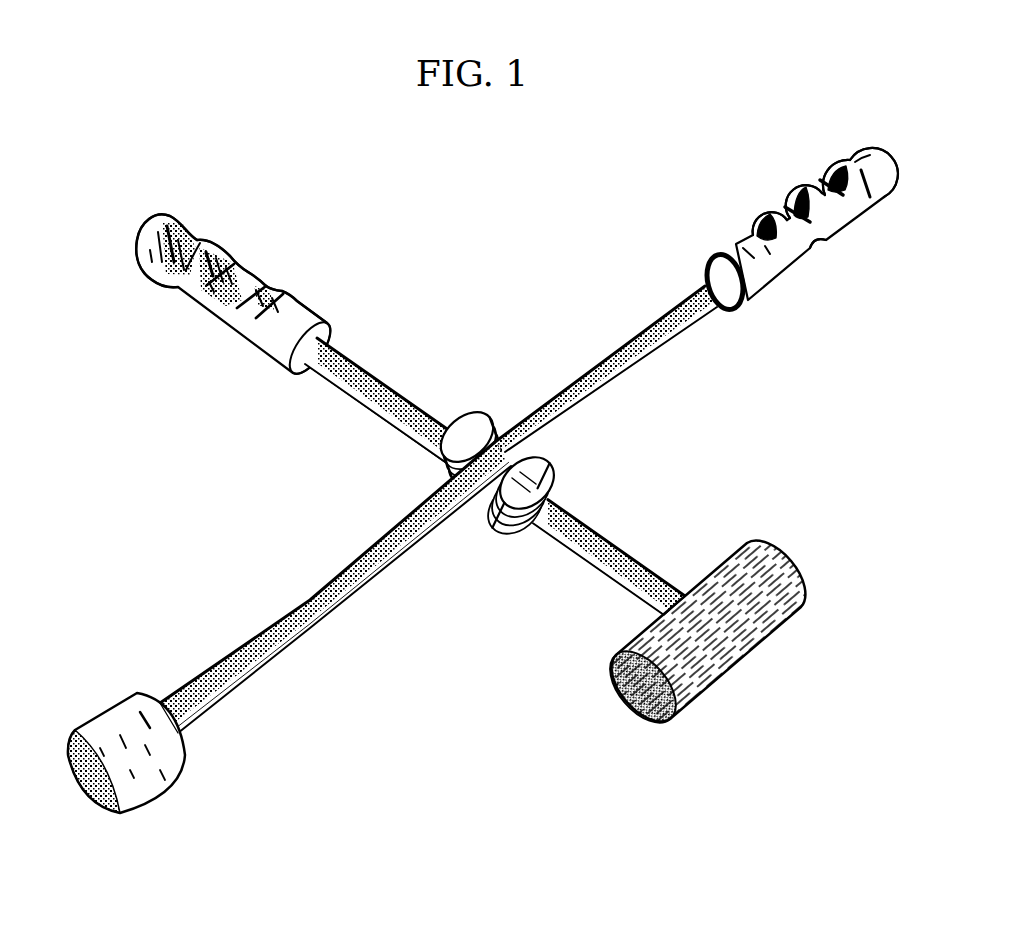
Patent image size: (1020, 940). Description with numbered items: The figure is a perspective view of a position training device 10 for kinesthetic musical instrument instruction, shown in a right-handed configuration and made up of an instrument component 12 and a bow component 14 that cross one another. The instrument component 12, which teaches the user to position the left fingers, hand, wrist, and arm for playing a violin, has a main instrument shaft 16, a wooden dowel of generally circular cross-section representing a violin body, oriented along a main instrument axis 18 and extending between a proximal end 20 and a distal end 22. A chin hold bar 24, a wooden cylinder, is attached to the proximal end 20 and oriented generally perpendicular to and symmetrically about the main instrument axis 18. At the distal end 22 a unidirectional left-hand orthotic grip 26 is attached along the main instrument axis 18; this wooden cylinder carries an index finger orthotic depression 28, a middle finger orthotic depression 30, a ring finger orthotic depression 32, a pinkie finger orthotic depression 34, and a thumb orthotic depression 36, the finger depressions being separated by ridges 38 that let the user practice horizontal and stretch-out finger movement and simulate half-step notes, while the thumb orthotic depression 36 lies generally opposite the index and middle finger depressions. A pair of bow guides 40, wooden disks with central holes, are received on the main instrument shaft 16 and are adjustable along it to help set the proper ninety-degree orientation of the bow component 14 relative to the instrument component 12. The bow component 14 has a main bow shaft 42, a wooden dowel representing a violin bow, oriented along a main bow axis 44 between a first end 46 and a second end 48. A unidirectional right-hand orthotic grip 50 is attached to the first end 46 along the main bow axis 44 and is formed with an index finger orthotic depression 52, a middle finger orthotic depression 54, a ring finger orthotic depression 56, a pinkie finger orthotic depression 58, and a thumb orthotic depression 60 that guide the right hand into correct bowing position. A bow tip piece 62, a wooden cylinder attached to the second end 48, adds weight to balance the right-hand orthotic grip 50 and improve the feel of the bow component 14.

The position training device 10 is at (109, 158).
The instrument component 12 is at (392, 390).
The bow component 14 is at (622, 378).
The main instrument shaft 16 is at (619, 548).
The main instrument axis 18 is at (753, 663).
The proximal end 20 is at (684, 594).
The distal end 22 is at (312, 373).
The chin hold bar 24 is at (716, 638).
The left-hand orthotic grip 26 is at (243, 301).
The index finger orthotic depression 28 is at (192, 229).
The middle finger orthotic depression 30 is at (237, 254).
The ring finger orthotic depression 32 is at (266, 278).
The pinkie finger orthotic depression 34 is at (291, 297).
The thumb orthotic depression 36 is at (176, 291).
The ridges 38 is at (212, 243).
The bow guides 40 is at (478, 416).
The main bow shaft 42 is at (331, 611).
The main bow axis 44 is at (84, 787).
The first end 46 is at (718, 316).
The second end 48 is at (161, 700).
The right-hand orthotic grip 50 is at (813, 246).
The index finger orthotic depression 52 is at (752, 227).
The middle finger orthotic depression 54 is at (789, 200).
The ring finger orthotic depression 56 is at (823, 175).
The pinkie finger orthotic depression 58 is at (885, 198).
The thumb orthotic depression 60 is at (813, 249).
The bow tip piece 62 is at (122, 743).